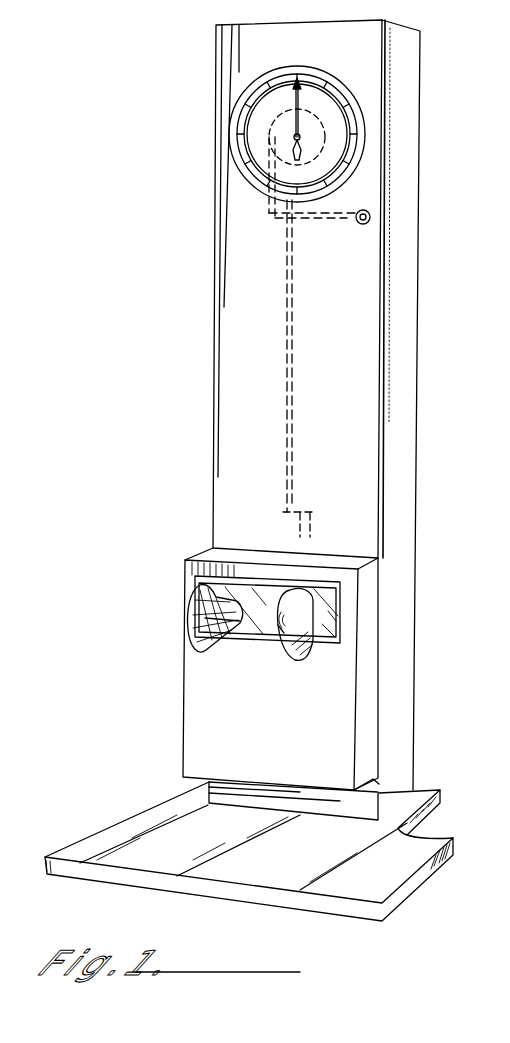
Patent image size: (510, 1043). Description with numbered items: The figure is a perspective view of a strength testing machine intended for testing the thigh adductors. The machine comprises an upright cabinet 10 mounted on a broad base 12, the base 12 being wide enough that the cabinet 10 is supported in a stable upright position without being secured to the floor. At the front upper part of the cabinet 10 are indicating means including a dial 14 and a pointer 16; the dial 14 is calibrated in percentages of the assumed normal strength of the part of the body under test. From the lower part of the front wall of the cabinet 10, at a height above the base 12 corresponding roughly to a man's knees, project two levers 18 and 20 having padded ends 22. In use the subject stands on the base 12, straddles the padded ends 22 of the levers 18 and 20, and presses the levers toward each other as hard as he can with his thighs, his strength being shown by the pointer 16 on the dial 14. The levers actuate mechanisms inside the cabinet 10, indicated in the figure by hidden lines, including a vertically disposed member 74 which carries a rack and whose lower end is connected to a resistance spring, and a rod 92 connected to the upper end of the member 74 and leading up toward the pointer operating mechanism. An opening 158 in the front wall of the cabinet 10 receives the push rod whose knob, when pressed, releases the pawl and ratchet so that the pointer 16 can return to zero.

The cabinet 10 is at (223, 400).
The base 12 is at (207, 790).
The dial 14 is at (253, 140).
The pointer 16 is at (230, 105).
The opening 158 is at (370, 218).
The rod 92 is at (290, 417).
The vertically disposed member 74 is at (313, 520).
The padded ends 22 is at (187, 625).
The lever 18 is at (235, 622).
The lever 20 is at (280, 635).